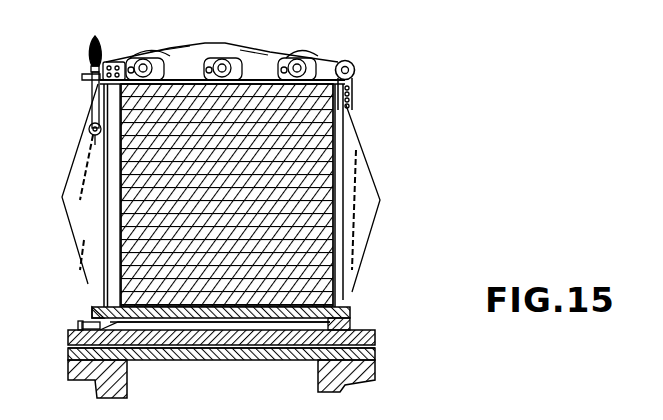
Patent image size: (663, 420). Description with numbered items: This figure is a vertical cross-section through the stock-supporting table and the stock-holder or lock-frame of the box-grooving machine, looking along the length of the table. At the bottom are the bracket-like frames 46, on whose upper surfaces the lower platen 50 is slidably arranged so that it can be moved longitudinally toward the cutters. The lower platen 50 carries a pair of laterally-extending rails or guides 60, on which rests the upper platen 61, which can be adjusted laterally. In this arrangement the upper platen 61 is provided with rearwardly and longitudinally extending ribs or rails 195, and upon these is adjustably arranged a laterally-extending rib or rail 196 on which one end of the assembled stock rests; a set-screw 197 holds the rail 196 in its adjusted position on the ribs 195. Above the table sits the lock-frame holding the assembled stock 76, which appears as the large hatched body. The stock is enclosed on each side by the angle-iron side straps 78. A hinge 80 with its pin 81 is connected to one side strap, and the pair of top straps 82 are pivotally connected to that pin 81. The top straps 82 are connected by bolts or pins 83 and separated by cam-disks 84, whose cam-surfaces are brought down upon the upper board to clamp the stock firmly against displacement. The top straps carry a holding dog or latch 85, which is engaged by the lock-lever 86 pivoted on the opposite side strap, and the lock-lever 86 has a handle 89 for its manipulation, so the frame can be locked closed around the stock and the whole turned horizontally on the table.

The bracket-like frames 46 is at (100, 385).
The lower platen 50 is at (158, 358).
The rails or guides 60 is at (253, 349).
The upper platen 61 is at (376, 337).
The stock 76 is at (327, 139).
The side straps 78 is at (77, 221).
The hinge 80 is at (353, 86).
The pin 81 is at (355, 70).
The top straps 82 is at (250, 47).
The bolts or pins 83 is at (143, 62).
The cam-disks 84 is at (150, 50).
The holding dog or latch 85 is at (82, 77).
The lock-lever 86 is at (93, 107).
The handle 89 is at (95, 36).
The ribs or rails 195 is at (98, 332).
The laterally-extending ribs or rails 196 is at (95, 310).
The set-screw 197 is at (80, 325).